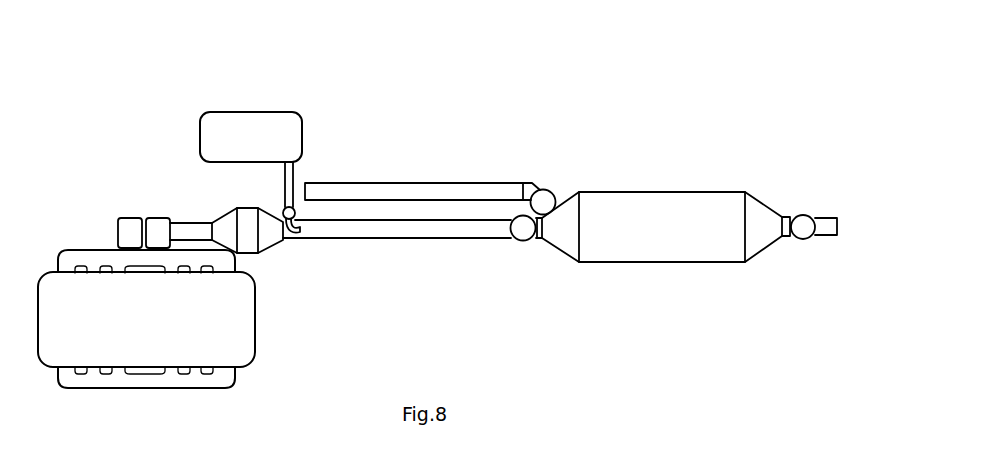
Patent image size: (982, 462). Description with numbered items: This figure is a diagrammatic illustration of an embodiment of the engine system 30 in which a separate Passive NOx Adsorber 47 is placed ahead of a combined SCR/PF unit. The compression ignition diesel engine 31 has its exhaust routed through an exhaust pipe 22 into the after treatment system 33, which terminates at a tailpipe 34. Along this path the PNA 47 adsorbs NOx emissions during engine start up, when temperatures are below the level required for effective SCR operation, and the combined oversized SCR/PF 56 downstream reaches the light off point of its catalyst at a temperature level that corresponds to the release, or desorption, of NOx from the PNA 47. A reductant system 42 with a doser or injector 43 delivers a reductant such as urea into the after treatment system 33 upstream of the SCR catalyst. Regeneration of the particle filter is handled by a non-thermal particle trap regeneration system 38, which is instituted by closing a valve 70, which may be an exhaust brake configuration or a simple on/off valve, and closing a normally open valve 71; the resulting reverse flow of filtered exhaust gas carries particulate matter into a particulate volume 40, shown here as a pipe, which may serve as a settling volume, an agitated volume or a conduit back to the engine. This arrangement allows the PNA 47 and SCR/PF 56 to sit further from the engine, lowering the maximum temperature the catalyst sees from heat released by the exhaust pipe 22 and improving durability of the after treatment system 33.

The engine system 30 is at (498, 102).
The compression ignition diesel engine 31 is at (246, 375).
The exhaust pipe 22 is at (435, 247).
The after treatment system 33 is at (388, 152).
The tailpipe 34 is at (824, 213).
The non-thermal particle trap regeneration system 38 is at (560, 187).
The particulate volume 40 is at (422, 152).
The reductant system 42 is at (217, 108).
The doser or injector 43 is at (297, 241).
The Passive NOx Adsorber 47 is at (270, 264).
The combined oversized SCR/PF 56 is at (664, 187).
The valve 70 is at (801, 240).
The normally open valve 71 is at (516, 241).